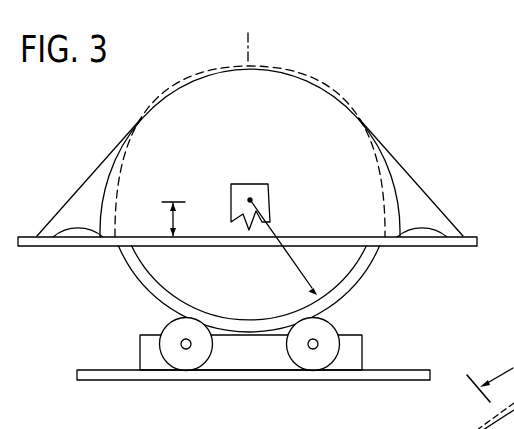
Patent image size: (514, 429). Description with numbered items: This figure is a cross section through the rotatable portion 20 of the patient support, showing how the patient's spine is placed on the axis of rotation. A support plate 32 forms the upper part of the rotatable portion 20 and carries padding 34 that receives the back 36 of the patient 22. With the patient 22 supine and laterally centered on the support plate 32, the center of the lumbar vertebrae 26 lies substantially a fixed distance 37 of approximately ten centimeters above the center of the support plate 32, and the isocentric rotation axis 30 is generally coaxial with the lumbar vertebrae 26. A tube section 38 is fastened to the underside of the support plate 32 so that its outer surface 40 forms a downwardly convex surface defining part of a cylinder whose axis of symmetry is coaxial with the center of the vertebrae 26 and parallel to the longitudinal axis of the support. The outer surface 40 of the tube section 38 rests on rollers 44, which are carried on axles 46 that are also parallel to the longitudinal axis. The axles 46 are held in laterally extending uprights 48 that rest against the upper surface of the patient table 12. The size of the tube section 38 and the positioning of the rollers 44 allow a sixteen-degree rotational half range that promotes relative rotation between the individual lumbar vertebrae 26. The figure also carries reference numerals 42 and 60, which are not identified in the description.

The patient table 12 is at (322, 380).
The rotatable portion 20 is at (85, 130).
The patient 22 is at (328, 130).
The lumbar vertebrae 26 is at (230, 192).
The isocentric rotation axis 30 is at (250, 199).
The support plate 32 is at (28, 236).
The padding 34 is at (82, 228).
The back 36 is at (410, 218).
The fixed distance 37 is at (168, 217).
The tube section 38 is at (138, 267).
The outer surface 40 is at (365, 263).
The radius arrow 42 is at (273, 228).
The rollers 44 is at (173, 327).
The axles 46 is at (306, 349).
The uprights 48 is at (357, 349).
The deflected dome profile 60 is at (368, 127).